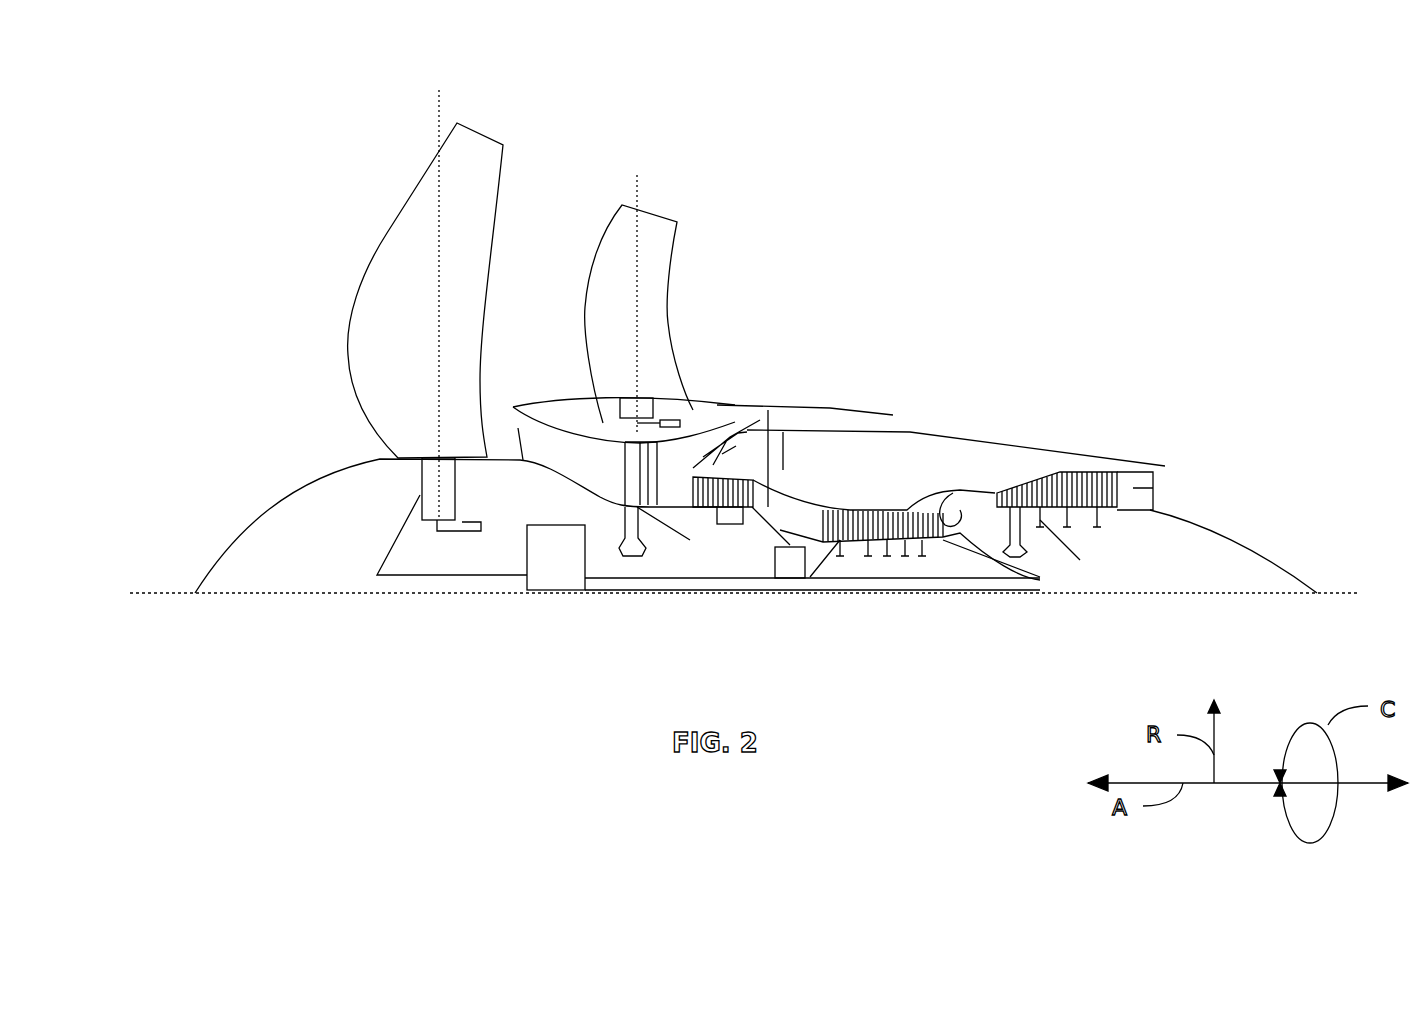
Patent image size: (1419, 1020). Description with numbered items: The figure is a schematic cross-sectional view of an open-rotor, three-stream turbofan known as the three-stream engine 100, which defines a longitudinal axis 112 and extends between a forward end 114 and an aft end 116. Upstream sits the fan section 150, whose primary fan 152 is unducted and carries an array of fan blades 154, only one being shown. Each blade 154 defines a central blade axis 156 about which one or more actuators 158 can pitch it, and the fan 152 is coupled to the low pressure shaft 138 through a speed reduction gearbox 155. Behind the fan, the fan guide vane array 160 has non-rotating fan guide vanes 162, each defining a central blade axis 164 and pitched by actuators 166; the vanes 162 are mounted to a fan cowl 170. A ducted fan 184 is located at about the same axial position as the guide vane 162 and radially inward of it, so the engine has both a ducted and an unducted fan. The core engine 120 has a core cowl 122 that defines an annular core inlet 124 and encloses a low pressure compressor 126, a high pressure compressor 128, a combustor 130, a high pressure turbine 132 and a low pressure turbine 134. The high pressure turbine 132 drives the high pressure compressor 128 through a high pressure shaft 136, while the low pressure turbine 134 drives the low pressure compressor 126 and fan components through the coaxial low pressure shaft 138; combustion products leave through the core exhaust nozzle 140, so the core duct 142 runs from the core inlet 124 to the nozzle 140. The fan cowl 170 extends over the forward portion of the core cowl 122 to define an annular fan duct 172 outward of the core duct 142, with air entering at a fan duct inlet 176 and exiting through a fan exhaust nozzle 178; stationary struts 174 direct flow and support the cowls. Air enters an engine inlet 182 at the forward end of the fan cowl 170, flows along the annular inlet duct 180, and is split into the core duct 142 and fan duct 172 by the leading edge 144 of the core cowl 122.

The three-stream engine 100 is at (820, 150).
The longitudinal axis 112 is at (1358, 600).
The forward end 114 is at (195, 588).
The aft end 116 is at (1322, 590).
The core engine 120 is at (910, 500).
The core cowl 122 is at (912, 431).
The core inlet 124 is at (685, 503).
The low pressure compressor 126 is at (728, 519).
The high pressure compressor 128 is at (897, 550).
The combustor 130 is at (955, 530).
The high pressure turbine 132 is at (1013, 488).
The low pressure turbine 134 is at (1079, 470).
The high pressure shaft 136 is at (1013, 535).
The low pressure shaft 138 is at (388, 552).
The core exhaust nozzle 140 is at (1133, 488).
The core duct 142 is at (970, 500).
The leading edge 144 is at (716, 525).
The fan section 150 is at (292, 172).
The fan 152 is at (315, 335).
The fan blade 154 is at (404, 237).
The speed reduction gearbox 155 is at (553, 567).
The central blade axis 156 is at (440, 110).
The actuator 158 is at (468, 522).
The fan guide vane array 160 is at (561, 233).
The fan guide vane 162 is at (653, 295).
The central blade axis 164 is at (638, 190).
The actuator 166 is at (665, 421).
The fan cowl 170 is at (742, 418).
The fan duct 172 is at (750, 425).
The stationary strut 174 is at (775, 425).
The fan duct inlet 176 is at (685, 464).
The fan exhaust nozzle 178 is at (892, 414).
The inlet duct 180 is at (604, 488).
The engine inlet 182 is at (512, 440).
The ducted fan 184 is at (598, 488).